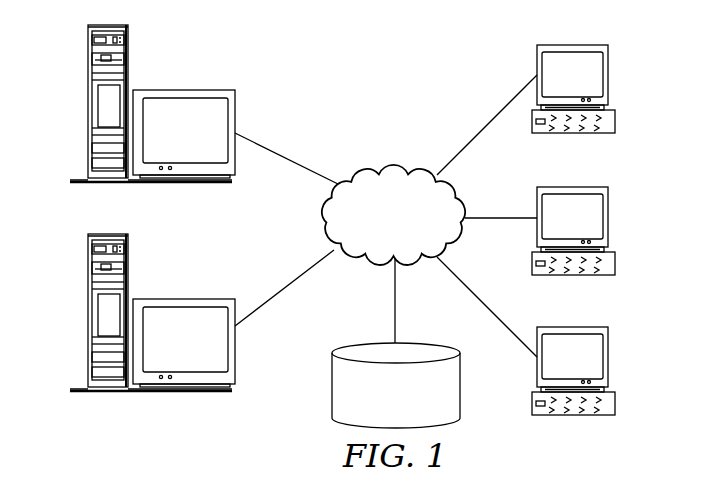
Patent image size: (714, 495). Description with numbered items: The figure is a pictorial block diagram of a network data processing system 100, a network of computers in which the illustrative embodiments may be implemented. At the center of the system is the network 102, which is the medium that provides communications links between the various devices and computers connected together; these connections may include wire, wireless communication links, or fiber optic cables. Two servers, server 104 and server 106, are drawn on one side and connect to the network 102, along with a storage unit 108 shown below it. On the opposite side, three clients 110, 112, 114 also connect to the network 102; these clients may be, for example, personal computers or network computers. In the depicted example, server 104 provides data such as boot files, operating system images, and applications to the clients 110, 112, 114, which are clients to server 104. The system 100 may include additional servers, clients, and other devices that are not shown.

The network data processing system 100 is at (447, 60).
The network 102 is at (364, 176).
The server 104 is at (88, 103).
The server 106 is at (88, 313).
The storage unit 108 is at (332, 395).
The client 110 is at (608, 73).
The client 112 is at (608, 215).
The client 114 is at (608, 357).